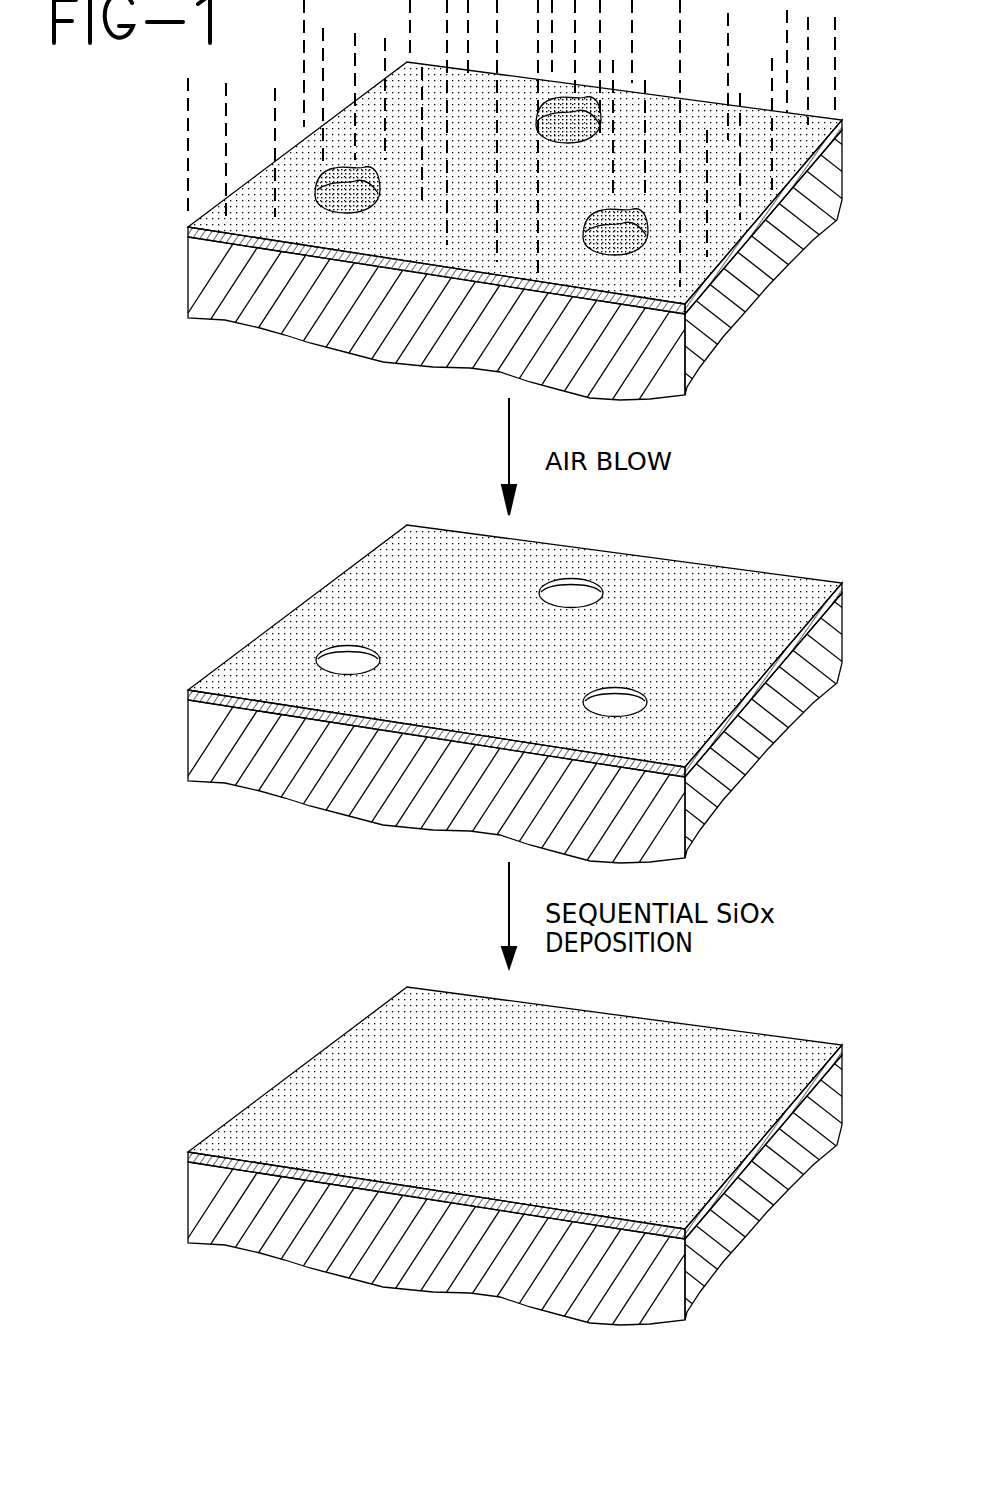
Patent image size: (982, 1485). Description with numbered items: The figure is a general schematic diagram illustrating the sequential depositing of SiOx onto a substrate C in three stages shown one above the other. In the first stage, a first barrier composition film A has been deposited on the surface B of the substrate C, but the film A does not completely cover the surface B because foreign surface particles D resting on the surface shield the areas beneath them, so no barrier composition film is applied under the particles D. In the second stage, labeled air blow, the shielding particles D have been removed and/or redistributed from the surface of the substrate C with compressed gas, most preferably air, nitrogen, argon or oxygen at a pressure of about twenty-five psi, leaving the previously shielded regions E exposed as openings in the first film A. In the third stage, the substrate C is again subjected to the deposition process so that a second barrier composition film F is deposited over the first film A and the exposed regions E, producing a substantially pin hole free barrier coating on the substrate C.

The first barrier composition film A is at (213, 218).
The surface of substrate B is at (733, 257).
The substrate C is at (293, 317).
The foreign surface particles D is at (643, 214).
The shielded regions E is at (345, 665).
The second barrier composition film F is at (290, 1105).